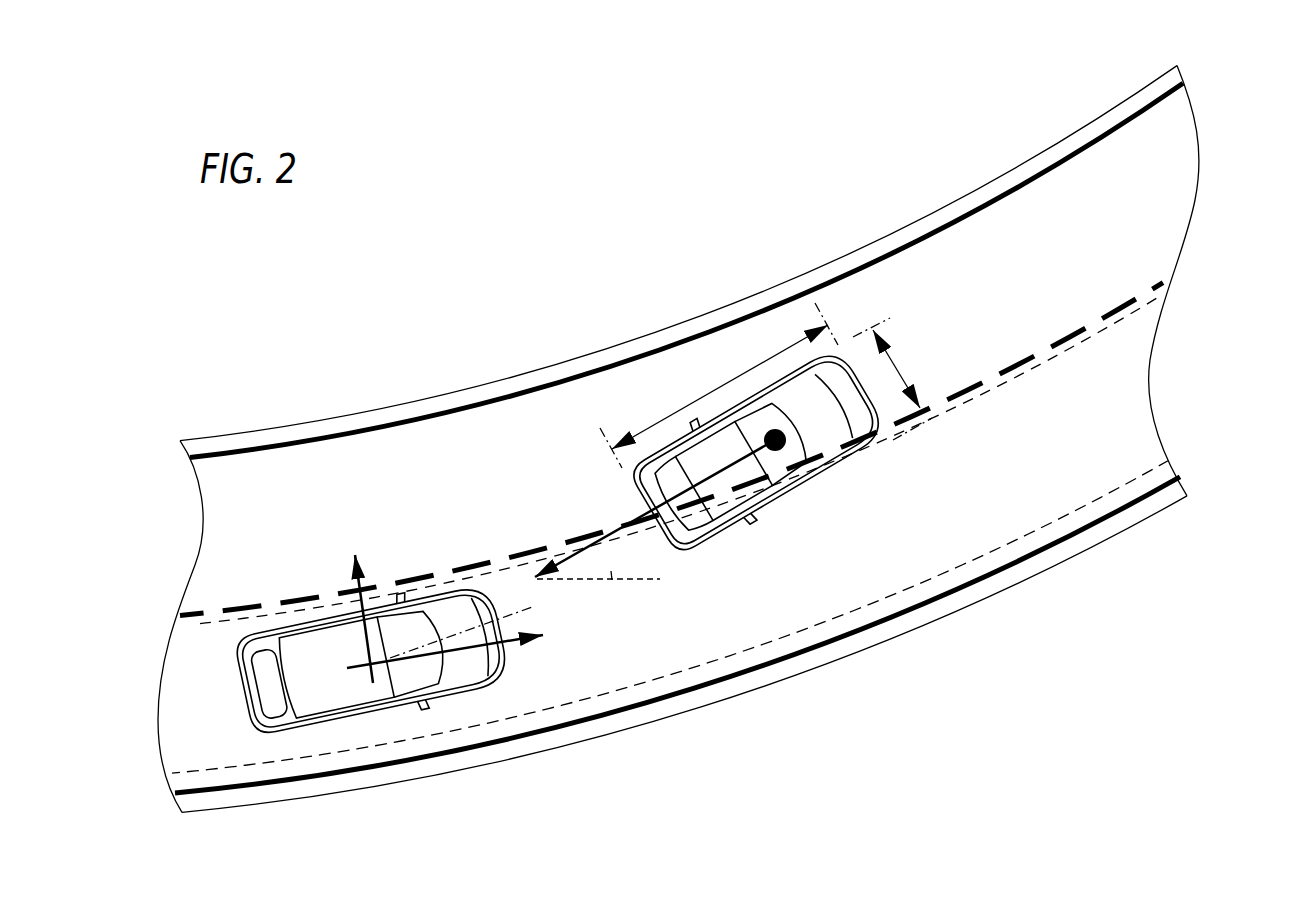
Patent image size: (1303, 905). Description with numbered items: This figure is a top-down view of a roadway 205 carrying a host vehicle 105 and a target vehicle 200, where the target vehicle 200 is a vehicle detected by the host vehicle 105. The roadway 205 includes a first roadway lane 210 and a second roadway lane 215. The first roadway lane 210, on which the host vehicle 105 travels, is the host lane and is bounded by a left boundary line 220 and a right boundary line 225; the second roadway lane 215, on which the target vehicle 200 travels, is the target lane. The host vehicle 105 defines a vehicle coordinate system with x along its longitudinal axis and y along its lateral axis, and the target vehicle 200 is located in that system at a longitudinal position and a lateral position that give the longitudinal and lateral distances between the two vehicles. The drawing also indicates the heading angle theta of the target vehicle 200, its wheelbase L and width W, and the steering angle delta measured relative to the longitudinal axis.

The host vehicle 105 is at (293, 625).
The target vehicle 200 is at (807, 487).
The roadway 205 is at (1240, 152).
The first roadway lane 210 is at (1027, 503).
The second roadway lane 215 is at (470, 438).
The left boundary line 220 is at (975, 402).
The right boundary line 225 is at (952, 592).